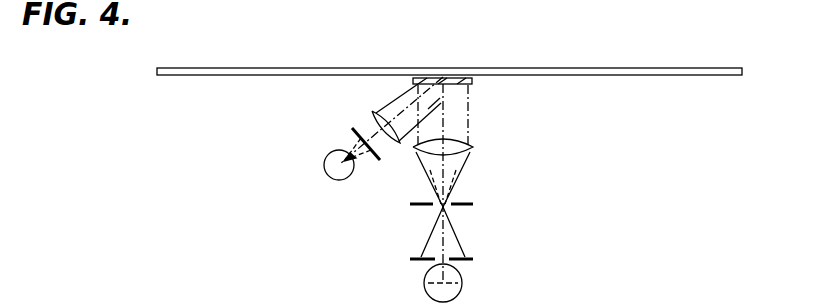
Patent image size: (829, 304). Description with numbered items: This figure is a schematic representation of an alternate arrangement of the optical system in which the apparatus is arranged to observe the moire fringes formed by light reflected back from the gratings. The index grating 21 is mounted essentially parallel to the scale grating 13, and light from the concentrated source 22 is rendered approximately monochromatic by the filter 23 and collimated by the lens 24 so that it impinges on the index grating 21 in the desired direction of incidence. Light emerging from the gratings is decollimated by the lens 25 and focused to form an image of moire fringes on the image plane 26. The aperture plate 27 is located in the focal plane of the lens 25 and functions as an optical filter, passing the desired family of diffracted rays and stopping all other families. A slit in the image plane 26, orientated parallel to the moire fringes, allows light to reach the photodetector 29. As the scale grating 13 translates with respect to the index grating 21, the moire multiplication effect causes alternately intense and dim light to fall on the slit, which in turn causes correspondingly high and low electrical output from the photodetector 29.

The scale grating 13 is at (655, 76).
The index grating 21 is at (472, 82).
The concentrated source 22 is at (326, 158).
The filter 23 is at (352, 130).
The lens 24 is at (377, 107).
The lens 25 is at (473, 146).
The image plane 26 is at (473, 258).
The aperture plate 27 is at (473, 203).
The photodetector 29 is at (460, 292).